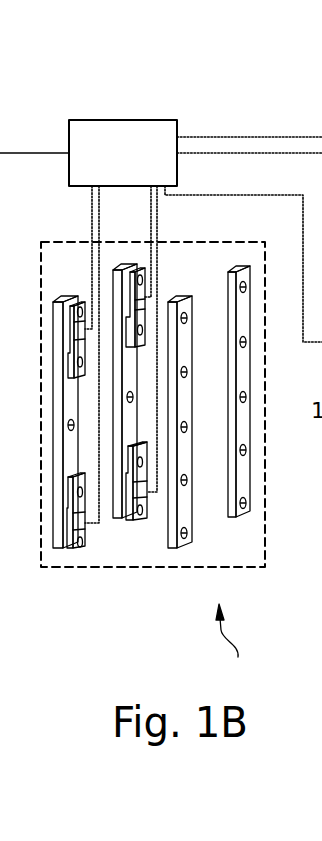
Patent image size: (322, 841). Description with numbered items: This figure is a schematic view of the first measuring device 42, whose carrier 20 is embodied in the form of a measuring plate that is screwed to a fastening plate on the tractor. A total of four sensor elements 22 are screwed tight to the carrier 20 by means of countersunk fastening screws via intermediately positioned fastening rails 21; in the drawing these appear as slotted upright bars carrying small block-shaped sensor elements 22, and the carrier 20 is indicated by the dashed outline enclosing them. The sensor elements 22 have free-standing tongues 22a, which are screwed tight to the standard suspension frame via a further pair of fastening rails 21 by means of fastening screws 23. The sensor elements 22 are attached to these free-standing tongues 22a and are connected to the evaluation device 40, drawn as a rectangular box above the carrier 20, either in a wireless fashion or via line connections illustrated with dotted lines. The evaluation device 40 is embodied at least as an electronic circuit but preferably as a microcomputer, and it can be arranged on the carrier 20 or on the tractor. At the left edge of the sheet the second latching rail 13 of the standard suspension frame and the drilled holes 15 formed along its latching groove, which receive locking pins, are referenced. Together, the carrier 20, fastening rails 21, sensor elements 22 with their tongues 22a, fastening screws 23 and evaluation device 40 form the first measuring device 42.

The evaluation device 40 is at (130, 120).
The carrier 20 is at (60, 243).
The fastening rails 21 is at (60, 548).
The sensor elements 22 is at (142, 318).
The free-standing tongues 22a is at (143, 267).
The fastening screws 23 is at (12, 377).
The drilled holes 15 is at (0, 545).
The second latching rail 13 is at (0, 683).
The first measuring device 42 is at (233, 646).